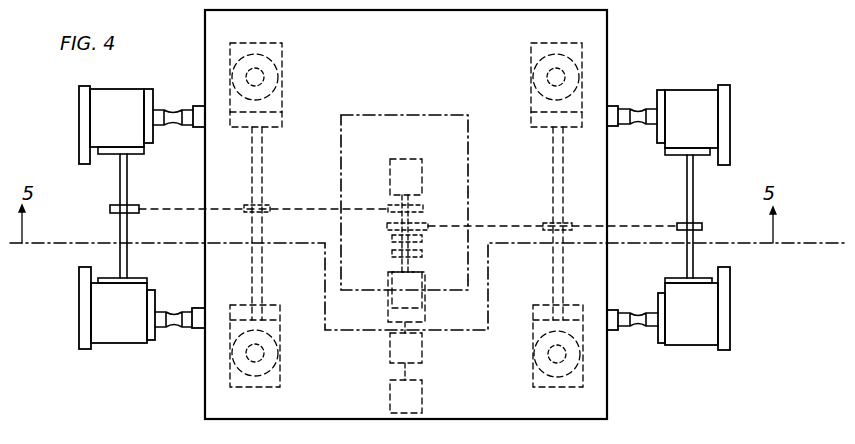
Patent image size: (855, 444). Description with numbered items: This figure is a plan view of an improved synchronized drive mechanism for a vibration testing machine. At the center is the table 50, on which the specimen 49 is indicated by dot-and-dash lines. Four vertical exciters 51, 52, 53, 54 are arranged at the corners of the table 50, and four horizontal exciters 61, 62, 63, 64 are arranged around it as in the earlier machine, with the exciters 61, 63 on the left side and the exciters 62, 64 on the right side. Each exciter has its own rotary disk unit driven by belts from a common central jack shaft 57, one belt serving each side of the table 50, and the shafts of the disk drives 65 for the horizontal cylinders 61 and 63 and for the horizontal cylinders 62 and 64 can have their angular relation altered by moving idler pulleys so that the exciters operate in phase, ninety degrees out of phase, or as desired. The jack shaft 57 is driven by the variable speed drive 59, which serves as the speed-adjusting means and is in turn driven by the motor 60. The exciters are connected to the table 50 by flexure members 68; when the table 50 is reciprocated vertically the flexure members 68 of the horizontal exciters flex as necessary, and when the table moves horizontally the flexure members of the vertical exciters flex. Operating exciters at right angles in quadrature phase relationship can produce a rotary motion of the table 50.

The specimen 49 is at (408, 115).
The table 50 is at (212, 32).
The exciter 51 is at (260, 387).
The exciter 52 is at (558, 387).
The exciter 53 is at (266, 43).
The exciter 54 is at (572, 43).
The jack shaft 57 is at (415, 258).
The variable speed drive 59 is at (425, 300).
The motor 60 is at (425, 317).
The horizontal exciter 61 is at (132, 333).
The horizontal exciter 62 is at (707, 328).
The horizontal exciter 63 is at (79, 112).
The horizontal exciter 64 is at (683, 90).
The disk drive 65 is at (128, 233).
The flexure member 68 is at (638, 323).